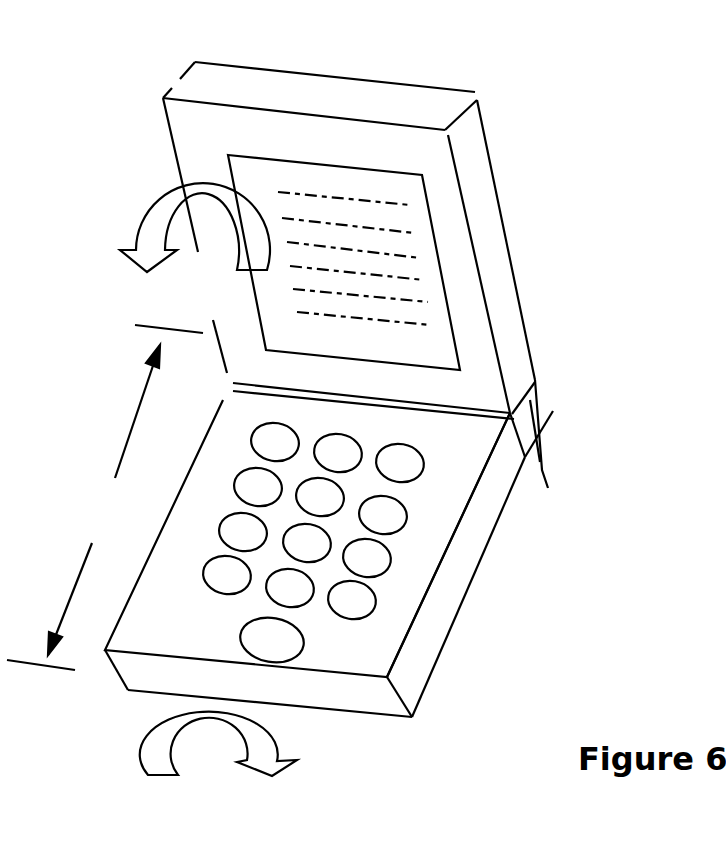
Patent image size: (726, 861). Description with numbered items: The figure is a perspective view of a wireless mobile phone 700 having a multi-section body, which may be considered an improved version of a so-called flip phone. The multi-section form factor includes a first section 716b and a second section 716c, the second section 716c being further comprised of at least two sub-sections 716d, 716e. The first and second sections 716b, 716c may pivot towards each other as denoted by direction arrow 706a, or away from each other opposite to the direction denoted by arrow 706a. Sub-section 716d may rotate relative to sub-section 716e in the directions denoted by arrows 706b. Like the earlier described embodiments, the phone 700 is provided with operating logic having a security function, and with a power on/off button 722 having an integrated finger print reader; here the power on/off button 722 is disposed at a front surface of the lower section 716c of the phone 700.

The phone 700 is at (88, 56).
The first section 716b is at (310, 103).
The second section 716c is at (105, 497).
The sub-section 716d is at (548, 488).
The sub-section 716e is at (463, 550).
The power on/off button 722 is at (287, 660).
The direction arrow 706a is at (195, 238).
The arrows 706b is at (218, 764).